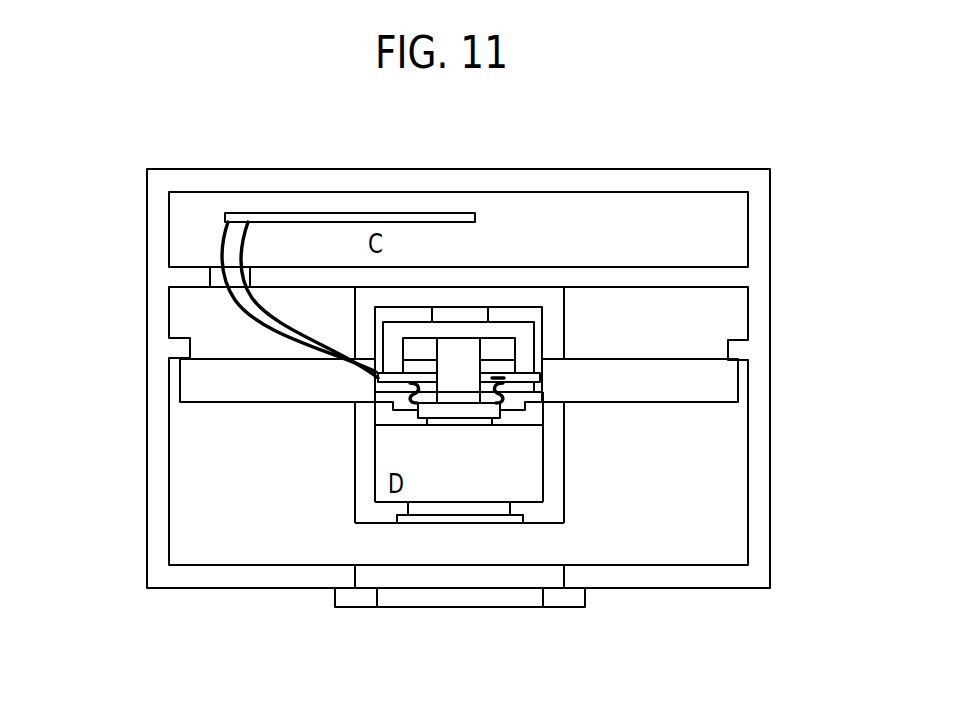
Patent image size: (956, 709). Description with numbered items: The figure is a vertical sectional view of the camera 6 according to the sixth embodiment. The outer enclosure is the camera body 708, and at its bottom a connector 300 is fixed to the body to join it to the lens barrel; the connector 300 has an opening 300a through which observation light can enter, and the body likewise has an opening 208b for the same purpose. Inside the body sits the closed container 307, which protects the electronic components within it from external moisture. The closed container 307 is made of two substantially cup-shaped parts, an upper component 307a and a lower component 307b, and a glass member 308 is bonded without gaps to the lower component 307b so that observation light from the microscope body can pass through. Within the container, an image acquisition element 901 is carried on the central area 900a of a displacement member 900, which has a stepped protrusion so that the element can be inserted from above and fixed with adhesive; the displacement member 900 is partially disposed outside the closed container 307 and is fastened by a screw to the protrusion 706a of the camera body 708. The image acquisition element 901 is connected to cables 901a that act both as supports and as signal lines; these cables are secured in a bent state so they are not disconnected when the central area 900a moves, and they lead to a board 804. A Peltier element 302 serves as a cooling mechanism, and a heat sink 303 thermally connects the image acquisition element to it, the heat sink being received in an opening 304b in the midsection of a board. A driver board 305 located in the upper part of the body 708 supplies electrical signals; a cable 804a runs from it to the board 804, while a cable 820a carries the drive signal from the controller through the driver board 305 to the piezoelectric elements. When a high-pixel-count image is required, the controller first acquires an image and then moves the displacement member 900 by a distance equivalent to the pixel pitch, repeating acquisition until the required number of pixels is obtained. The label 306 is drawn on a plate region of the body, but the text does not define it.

The camera 6 is at (742, 147).
The camera body 708 is at (752, 590).
The top cover plate 306 is at (723, 265).
The protrusion 706a is at (178, 348).
The displacement member 900 is at (176, 379).
The closed container 307 is at (66, 407).
The upper component 307a is at (353, 327).
The lower component 307b is at (353, 413).
The central area 900a is at (395, 425).
The Peltier element 302 is at (475, 313).
The heat sink 303 is at (510, 333).
The image acquisition element 901 is at (462, 420).
The cables 901a is at (500, 425).
The board 804 is at (547, 379).
The opening 304b is at (507, 383).
The driver board 305 is at (300, 212).
The cable 820a is at (236, 240).
The cable 804a is at (309, 300).
The glass member 308 is at (420, 518).
The opening 208b is at (395, 590).
The connector 300 is at (570, 608).
The opening 300a is at (508, 595).